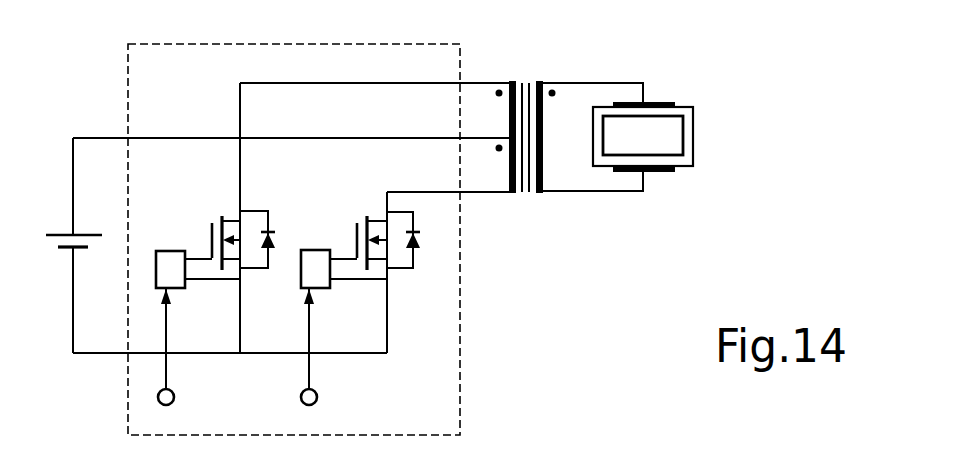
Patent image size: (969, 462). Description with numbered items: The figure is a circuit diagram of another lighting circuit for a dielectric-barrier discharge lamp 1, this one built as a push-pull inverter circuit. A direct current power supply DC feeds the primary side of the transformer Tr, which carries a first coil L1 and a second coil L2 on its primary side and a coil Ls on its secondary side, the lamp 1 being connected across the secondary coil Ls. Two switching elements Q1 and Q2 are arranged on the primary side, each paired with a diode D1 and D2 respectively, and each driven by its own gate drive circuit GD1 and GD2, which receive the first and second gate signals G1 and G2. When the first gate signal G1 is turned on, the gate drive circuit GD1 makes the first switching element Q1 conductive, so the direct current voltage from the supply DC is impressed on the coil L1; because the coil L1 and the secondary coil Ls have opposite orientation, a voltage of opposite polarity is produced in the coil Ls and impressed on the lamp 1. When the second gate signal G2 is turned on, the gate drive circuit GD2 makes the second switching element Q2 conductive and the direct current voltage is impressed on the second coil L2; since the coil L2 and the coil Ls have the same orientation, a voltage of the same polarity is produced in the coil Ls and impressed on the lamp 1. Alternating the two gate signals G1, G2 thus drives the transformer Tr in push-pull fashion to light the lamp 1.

The dielectric-barrier discharge lamp 1 is at (693, 137).
The direct current power supply DC is at (52, 240).
The gate drive circuit GD1 is at (170, 249).
The gate drive circuit GD2 is at (313, 248).
The first switching element Q1 is at (222, 214).
The second switching element Q2 is at (367, 214).
The diode D1 is at (270, 228).
The diode D2 is at (420, 246).
The first gate signal G1 is at (184, 350).
The second gate signal G2 is at (328, 350).
The transformer Tr is at (525, 196).
The coil on the primary side of the transformer L1 is at (490, 111).
The second coil on the primary side of the transformer L2 is at (490, 165).
The coil on the secondary side of the transformer Ls is at (593, 137).